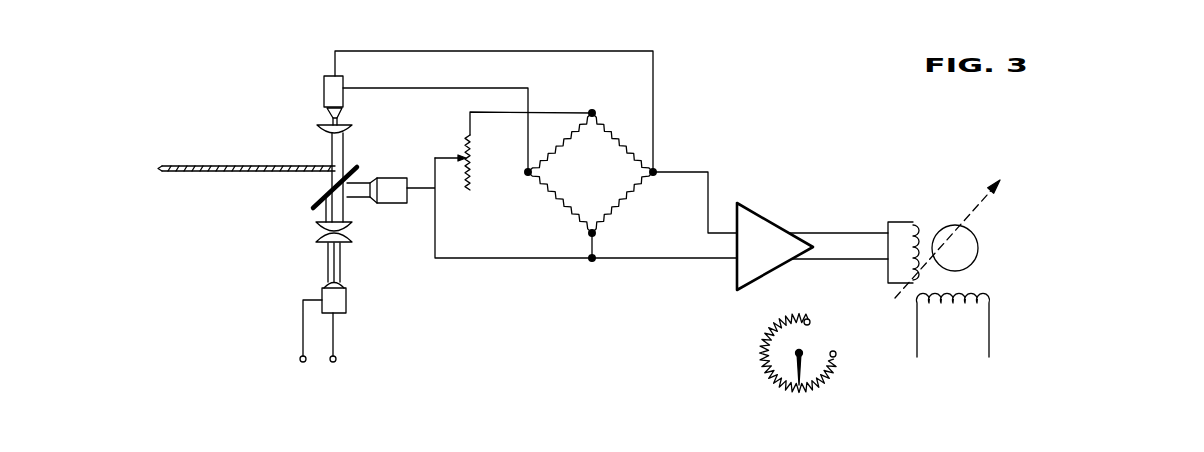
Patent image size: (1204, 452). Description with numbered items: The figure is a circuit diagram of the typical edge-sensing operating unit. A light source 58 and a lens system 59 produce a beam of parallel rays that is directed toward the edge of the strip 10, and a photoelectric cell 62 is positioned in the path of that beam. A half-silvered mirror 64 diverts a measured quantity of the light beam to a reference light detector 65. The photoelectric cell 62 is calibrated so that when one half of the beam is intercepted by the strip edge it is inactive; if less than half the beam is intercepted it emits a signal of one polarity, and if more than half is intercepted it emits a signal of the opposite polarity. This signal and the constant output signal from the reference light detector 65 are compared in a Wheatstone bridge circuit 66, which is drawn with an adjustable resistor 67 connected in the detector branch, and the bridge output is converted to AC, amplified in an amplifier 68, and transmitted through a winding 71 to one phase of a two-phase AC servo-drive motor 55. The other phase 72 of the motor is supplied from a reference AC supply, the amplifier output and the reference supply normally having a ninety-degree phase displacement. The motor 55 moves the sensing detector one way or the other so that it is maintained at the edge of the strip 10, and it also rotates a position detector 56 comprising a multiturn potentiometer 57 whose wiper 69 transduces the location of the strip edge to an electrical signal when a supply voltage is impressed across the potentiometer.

The strip 10 is at (180, 170).
The photoelectric cell 62 is at (324, 96).
The half-silvered mirror 64 is at (355, 166).
The reference light detector 65 is at (406, 190).
The lens system 59 is at (318, 226).
The light source 58 is at (322, 290).
The potentiometer 67 is at (478, 168).
The Wheatstone bridge circuit 66 is at (578, 172).
The amplifier 68 is at (777, 218).
The winding 71 is at (920, 222).
The servo-drive motor 55 is at (984, 272).
The position detector 56 is at (821, 320).
The multiturn potentiometer 57 is at (816, 377).
The wiper 69 is at (797, 360).
The other phase 72 is at (976, 293).